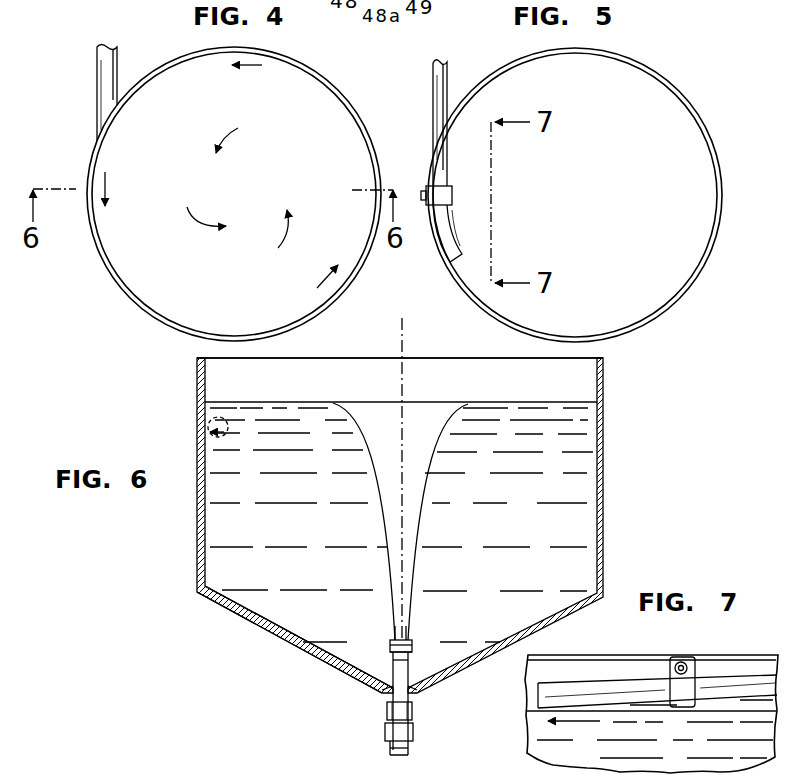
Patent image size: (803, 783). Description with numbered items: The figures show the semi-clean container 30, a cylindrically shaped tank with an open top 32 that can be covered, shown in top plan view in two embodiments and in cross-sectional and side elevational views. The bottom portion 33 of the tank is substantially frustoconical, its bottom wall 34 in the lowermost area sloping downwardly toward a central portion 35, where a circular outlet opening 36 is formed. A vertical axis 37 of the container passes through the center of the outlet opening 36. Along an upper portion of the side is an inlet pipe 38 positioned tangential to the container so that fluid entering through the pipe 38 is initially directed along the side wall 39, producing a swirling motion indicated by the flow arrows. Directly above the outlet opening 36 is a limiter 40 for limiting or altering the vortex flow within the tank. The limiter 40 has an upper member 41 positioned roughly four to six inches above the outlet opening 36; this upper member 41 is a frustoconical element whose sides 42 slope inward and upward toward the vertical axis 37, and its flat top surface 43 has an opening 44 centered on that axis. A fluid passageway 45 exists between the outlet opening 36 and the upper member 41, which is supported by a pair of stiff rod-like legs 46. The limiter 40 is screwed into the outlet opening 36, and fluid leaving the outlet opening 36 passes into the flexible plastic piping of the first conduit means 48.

In FIG. 4, the semi-clean container 30 is at (339, 82).
In FIG. 5, the semi-clean container 30 is at (652, 70).
In FIG. 6, the semi-clean container 30 is at (630, 410).
In FIG. 7, the semi-clean container 30 is at (756, 654).
In FIG. 6, the open top 32 is at (349, 357).
In FIG. 7, the open top 32 is at (638, 656).
In FIG. 6, the bottom portion 33 is at (242, 628).
In FIG. 6, the bottom wall 34 is at (297, 652).
In FIG. 6, the central portion 35 is at (415, 697).
In FIG. 6, the outlet opening 36 is at (388, 697).
In FIG. 6, the vertical axis 37 is at (400, 398).
In FIG. 4, the inlet pipe 38 is at (95, 117).
In FIG. 5, the inlet pipe 38 is at (445, 268).
In FIG. 6, the inlet pipe 38 is at (233, 430).
In FIG. 7, the inlet pipe 38 is at (718, 679).
In FIG. 4, the side wall 39 is at (106, 270).
In FIG. 5, the side wall 39 is at (480, 310).
In FIG. 6, the side wall 39 is at (198, 447).
In FIG. 7, the side wall 39 is at (603, 663).
In FIG. 6, the vortex limiter 40 is at (428, 646).
In FIG. 6, the upper member 41 is at (389, 652).
In FIG. 6, the sides 42 is at (390, 643).
In FIG. 6, the flat top surface 43 is at (402, 640).
In FIG. 6, the opening 44 is at (395, 640).
In FIG. 6, the fluid passageway 45 is at (408, 668).
In FIG. 6, the legs 46 is at (400, 668).
In FIG. 6, the first conduit means 48 is at (392, 750).